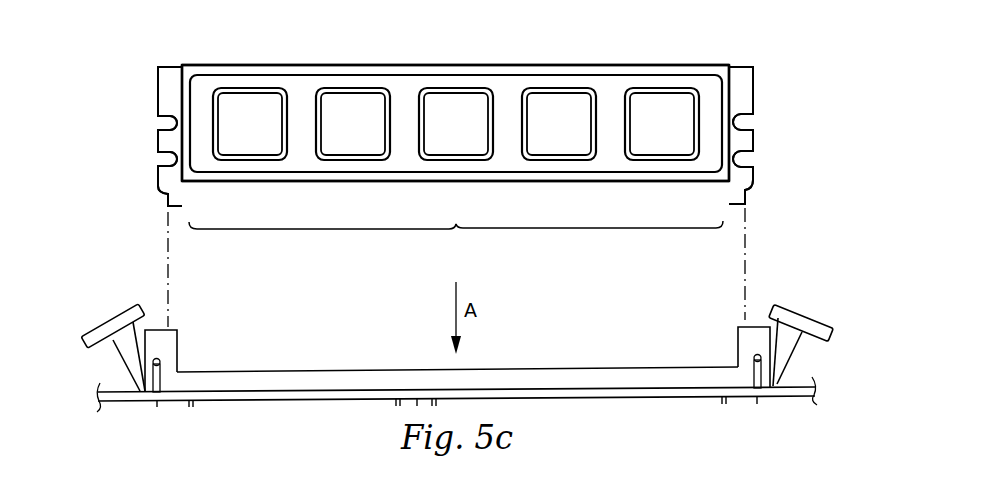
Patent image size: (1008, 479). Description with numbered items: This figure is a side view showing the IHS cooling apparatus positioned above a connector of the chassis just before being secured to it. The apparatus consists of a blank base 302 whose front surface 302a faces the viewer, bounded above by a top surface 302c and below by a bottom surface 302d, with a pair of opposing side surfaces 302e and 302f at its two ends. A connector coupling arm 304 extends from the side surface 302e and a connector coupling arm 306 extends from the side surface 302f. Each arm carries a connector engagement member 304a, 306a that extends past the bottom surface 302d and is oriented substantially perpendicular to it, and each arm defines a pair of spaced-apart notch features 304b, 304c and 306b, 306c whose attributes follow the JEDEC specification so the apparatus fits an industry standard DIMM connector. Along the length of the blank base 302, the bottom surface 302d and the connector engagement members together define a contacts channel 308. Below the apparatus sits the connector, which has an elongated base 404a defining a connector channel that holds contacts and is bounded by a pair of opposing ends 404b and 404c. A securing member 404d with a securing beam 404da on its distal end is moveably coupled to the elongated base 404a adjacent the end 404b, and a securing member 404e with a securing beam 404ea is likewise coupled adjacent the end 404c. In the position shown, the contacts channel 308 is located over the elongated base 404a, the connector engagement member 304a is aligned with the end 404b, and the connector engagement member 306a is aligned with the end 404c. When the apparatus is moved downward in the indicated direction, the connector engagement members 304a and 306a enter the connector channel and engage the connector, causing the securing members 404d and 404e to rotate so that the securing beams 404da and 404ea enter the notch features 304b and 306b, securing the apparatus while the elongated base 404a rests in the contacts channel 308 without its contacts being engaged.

The blank base 302 is at (346, 60).
The front surface 302a is at (582, 67).
The top surface 302c is at (453, 64).
The bottom surface 302d is at (455, 183).
The side surface 302e is at (178, 100).
The side surface 302f is at (732, 96).
The connector coupling arm 304 is at (171, 66).
The connector engagement member 304a is at (174, 198).
The notch feature 304b is at (168, 125).
The notch feature 304c is at (168, 162).
The connector coupling arm 306 is at (740, 65).
The connector engagement member 306a is at (741, 193).
The notch feature 306b is at (745, 122).
The notch feature 306c is at (745, 159).
The contacts channel 308 is at (456, 243).
The elongated base 404a is at (557, 368).
The end 404b is at (178, 345).
The end 404c is at (738, 340).
The securing member 404d is at (93, 322).
The securing beam 404da is at (145, 303).
The securing member 404e is at (822, 317).
The securing beam 404ea is at (772, 303).